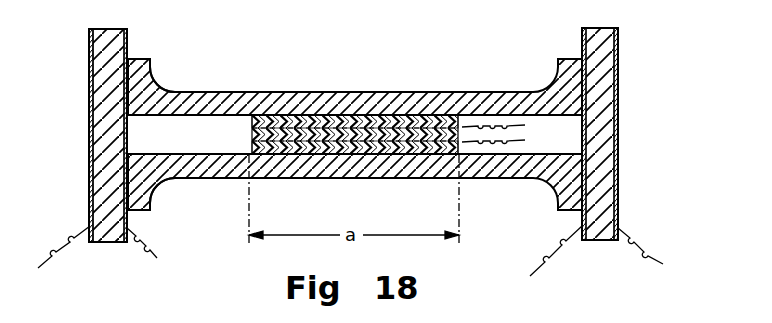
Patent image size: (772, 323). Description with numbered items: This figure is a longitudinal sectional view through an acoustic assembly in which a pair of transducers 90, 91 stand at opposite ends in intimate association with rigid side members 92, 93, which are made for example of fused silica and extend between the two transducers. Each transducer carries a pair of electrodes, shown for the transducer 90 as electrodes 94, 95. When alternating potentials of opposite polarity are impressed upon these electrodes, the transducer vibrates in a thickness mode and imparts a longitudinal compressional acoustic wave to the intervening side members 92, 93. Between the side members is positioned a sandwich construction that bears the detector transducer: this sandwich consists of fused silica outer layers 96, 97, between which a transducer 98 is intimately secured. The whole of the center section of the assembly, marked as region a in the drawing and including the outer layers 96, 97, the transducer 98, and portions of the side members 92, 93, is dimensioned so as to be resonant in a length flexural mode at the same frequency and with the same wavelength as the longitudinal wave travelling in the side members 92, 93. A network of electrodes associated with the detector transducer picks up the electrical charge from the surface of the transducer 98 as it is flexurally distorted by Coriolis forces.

The transducer 90 is at (92, 184).
The transducer 91 is at (608, 201).
The rigid side member 92 is at (209, 93).
The rigid side member 93 is at (193, 180).
The electrode 94 is at (90, 52).
The electrode 95 is at (128, 64).
The fused silica outer layer 96 is at (305, 124).
The fused silica outer layer 97 is at (302, 157).
The transducer 98 is at (252, 142).